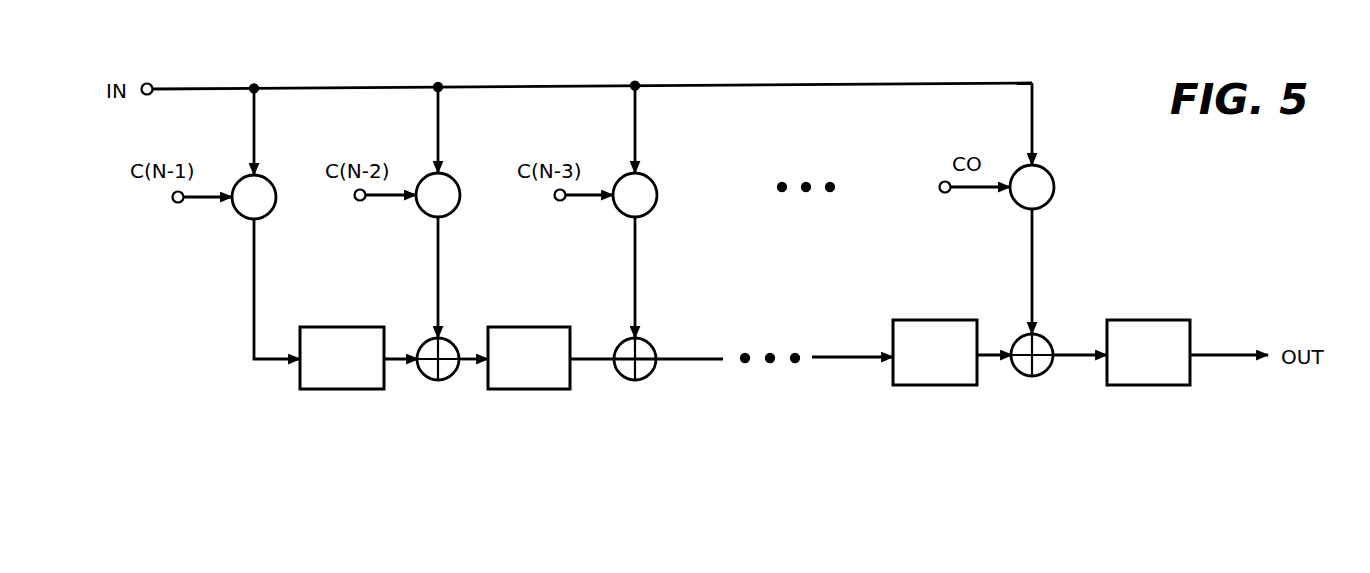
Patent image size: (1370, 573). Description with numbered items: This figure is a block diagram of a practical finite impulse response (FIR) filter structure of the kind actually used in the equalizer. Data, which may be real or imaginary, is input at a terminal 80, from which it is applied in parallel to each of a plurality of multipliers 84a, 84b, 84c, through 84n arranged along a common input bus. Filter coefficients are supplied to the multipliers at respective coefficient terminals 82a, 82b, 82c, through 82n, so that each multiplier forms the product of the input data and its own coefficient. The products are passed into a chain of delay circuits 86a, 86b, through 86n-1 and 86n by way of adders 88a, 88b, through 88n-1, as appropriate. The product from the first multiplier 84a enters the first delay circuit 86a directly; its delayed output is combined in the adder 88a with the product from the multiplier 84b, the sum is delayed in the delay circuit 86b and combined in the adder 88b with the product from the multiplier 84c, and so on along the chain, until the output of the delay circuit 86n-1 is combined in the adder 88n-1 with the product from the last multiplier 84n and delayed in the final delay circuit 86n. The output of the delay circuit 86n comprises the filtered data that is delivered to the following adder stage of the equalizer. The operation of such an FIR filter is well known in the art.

The terminal 80 is at (151, 85).
The terminal 82a is at (175, 202).
The terminal 82b is at (358, 200).
The terminal 82c is at (557, 200).
The terminal 82n is at (941, 191).
The multiplier 84a is at (271, 181).
The multiplier 84b is at (455, 179).
The multiplier 84c is at (652, 179).
The multiplier 84n is at (1049, 171).
The delay circuit 86a is at (312, 327).
The delay circuit 86b is at (557, 327).
The delay circuit 86n-1 is at (907, 320).
The delay circuit 86n is at (1150, 320).
The adder 88a is at (452, 344).
The adder 88b is at (650, 344).
The adder 88n-1 is at (1046, 339).